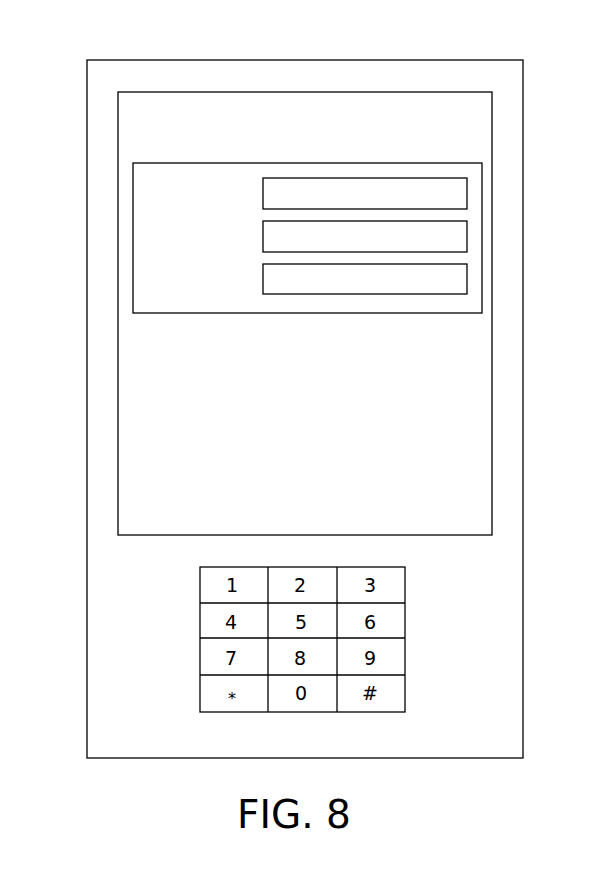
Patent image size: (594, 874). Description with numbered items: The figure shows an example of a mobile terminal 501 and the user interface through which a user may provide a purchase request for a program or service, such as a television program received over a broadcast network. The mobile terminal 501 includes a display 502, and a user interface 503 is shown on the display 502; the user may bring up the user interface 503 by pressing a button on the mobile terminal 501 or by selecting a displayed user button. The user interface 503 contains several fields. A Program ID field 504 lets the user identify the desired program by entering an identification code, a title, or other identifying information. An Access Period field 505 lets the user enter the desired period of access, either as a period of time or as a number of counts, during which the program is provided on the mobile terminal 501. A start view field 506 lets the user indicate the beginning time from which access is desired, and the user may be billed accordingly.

The mobile terminal 501 is at (87, 91).
The display 502 is at (118, 163).
The user interface 503 is at (468, 162).
The Program ID field 504 is at (467, 197).
The Access Period field 505 is at (467, 240).
The start view field 506 is at (467, 277).